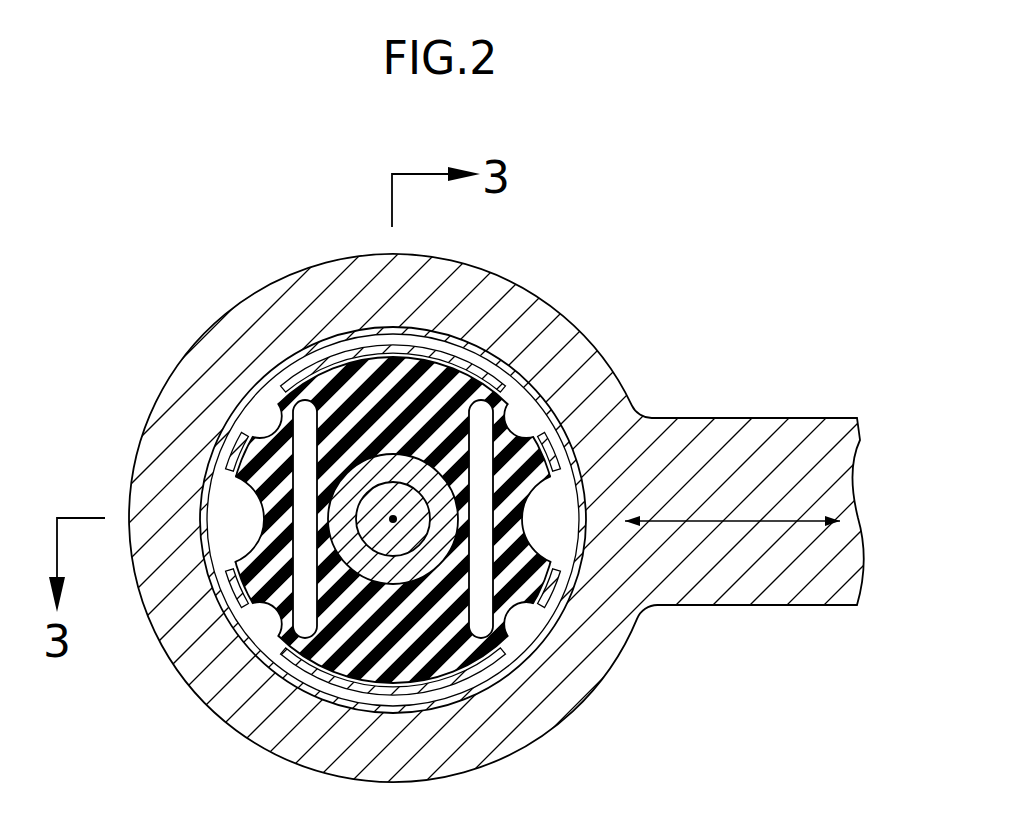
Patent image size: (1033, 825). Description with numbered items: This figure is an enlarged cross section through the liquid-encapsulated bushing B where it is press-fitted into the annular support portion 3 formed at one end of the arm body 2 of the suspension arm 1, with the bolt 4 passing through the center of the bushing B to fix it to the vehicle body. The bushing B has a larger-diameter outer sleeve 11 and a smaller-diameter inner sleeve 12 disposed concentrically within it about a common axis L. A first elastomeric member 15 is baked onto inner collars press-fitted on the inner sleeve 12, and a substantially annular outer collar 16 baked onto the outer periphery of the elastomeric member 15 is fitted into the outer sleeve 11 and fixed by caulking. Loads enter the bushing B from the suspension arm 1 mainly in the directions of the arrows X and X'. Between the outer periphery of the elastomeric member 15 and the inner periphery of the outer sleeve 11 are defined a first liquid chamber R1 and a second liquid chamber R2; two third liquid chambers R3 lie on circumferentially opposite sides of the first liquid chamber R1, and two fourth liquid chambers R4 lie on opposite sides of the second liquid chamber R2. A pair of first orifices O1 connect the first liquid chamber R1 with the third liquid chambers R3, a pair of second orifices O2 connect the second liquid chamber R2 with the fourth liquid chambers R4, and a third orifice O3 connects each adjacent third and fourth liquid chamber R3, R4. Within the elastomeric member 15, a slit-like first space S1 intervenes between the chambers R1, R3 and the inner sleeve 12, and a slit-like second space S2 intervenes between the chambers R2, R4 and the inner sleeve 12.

The suspension arm 1 is at (722, 402).
The arm body 2 is at (800, 440).
The annular support portion 3 is at (500, 313).
The bolt 4 is at (387, 495).
The outer sleeve 11 is at (205, 503).
The inner sleeve 12 is at (412, 560).
The first elastomeric member 15 is at (228, 680).
The outer collar 16 is at (377, 690).
The liquid-encapsulated bushing B is at (240, 390).
The center axis L is at (393, 519).
The first orifice O1 is at (223, 452).
The second orifice O2 is at (625, 393).
The third orifice O3 is at (350, 347).
The first liquid chamber R1 is at (226, 525).
The second liquid chamber R2 is at (544, 533).
The third liquid chamber R3 is at (250, 426).
The fourth liquid chamber R4 is at (520, 435).
The first space S1 is at (294, 533).
The second space S2 is at (470, 533).
The load direction arrow X is at (732, 534).